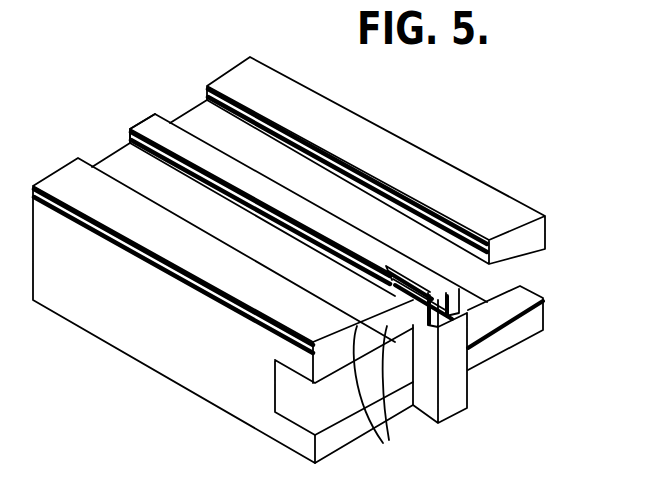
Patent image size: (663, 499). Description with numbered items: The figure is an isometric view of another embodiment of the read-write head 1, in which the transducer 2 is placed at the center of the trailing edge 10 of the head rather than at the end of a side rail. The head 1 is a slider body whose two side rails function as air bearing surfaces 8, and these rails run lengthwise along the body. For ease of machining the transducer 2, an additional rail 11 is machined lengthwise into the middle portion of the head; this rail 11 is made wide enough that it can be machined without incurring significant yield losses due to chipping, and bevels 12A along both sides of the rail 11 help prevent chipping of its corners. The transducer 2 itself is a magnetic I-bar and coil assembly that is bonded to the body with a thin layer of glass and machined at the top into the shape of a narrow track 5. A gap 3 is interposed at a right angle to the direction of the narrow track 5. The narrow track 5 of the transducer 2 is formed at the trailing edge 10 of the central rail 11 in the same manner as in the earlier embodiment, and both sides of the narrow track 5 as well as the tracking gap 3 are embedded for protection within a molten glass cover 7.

The read-write head 1 is at (279, 146).
The transducer 2 is at (460, 408).
The gap 3 is at (412, 262).
The narrow track 5 is at (442, 281).
The molten glass cover 7 is at (502, 289).
The air bearing surfaces 8 is at (262, 80).
The trailing edge 10 is at (348, 392).
The rail 11 is at (152, 118).
The bevels 12A is at (133, 128).